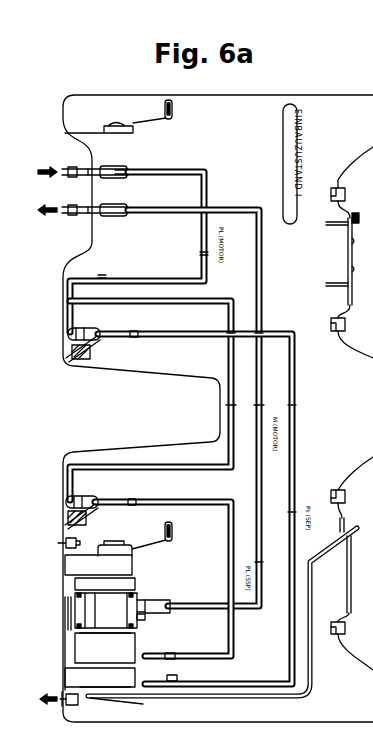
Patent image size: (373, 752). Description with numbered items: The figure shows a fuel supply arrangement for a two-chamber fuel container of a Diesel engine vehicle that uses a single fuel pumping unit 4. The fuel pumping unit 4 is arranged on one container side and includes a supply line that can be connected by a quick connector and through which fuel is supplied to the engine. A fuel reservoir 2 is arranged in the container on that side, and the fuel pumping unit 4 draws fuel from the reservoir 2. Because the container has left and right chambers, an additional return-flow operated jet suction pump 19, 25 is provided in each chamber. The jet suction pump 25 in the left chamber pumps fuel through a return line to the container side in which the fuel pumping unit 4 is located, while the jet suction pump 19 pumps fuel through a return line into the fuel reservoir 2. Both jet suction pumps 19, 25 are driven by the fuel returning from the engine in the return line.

The fuel reservoir 2 is at (88, 553).
The fuel pumping unit 4 is at (133, 605).
The jet suction pump 19 is at (63, 523).
The jet suction pump 25 is at (64, 357).